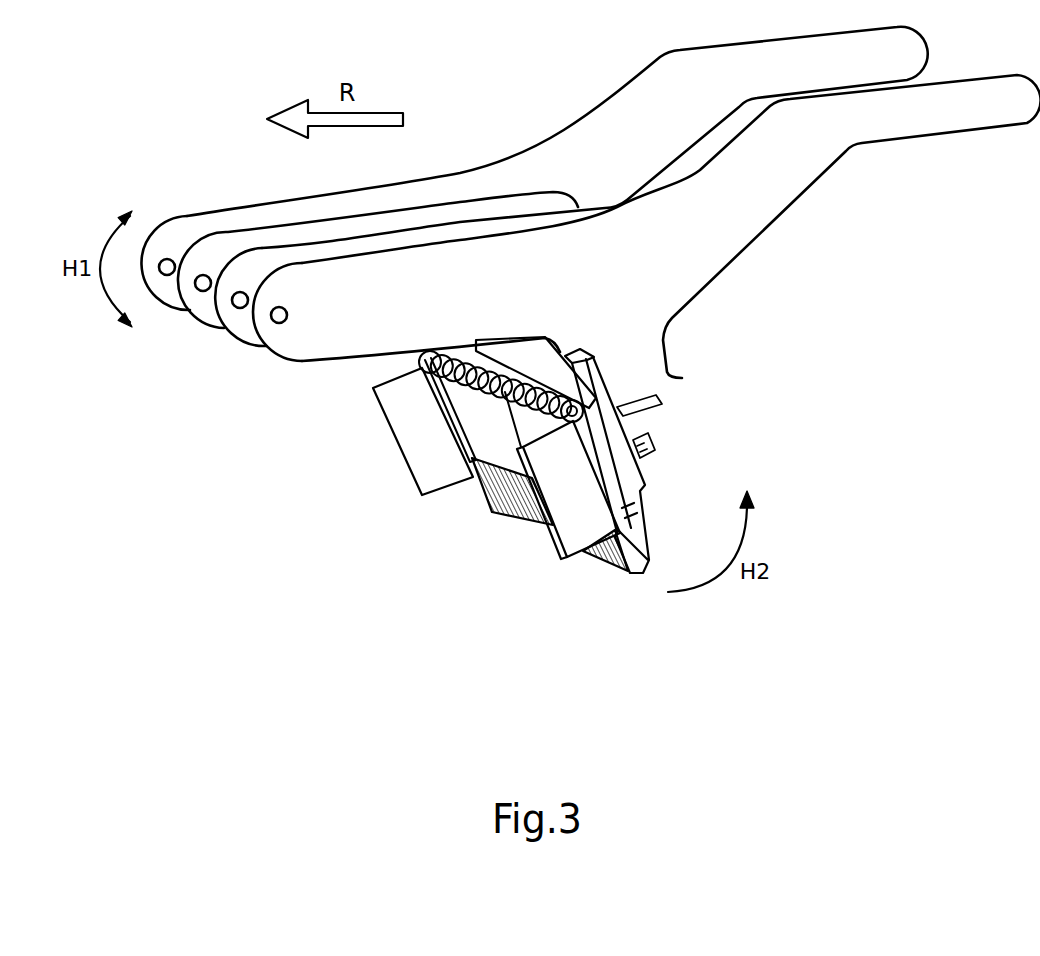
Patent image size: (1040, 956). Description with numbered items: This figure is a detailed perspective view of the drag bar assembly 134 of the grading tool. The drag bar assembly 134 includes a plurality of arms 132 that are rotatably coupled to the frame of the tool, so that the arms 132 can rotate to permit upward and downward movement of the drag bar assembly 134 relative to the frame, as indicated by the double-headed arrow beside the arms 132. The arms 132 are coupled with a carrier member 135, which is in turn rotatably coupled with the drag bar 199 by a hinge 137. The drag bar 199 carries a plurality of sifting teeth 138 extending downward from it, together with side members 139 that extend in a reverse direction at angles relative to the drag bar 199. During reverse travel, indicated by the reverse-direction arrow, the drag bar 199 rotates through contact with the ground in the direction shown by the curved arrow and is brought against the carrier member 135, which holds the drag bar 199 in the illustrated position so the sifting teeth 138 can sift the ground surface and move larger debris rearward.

The arms 132 is at (283, 233).
The drag bar assembly 134 is at (540, 471).
The carrier member 135 is at (612, 428).
The hinge 137 is at (575, 413).
The sifting teeth 138 is at (527, 515).
The side members 139 is at (402, 403).
The drag bar 199 is at (465, 433).